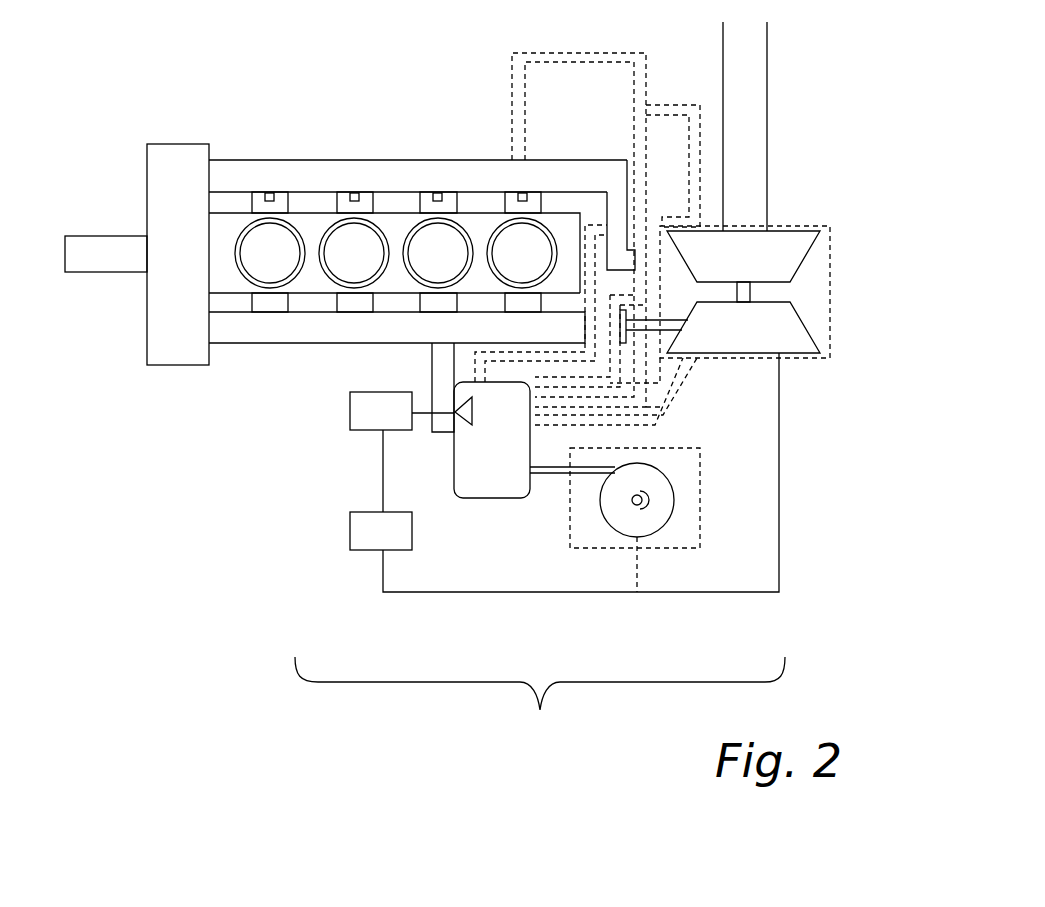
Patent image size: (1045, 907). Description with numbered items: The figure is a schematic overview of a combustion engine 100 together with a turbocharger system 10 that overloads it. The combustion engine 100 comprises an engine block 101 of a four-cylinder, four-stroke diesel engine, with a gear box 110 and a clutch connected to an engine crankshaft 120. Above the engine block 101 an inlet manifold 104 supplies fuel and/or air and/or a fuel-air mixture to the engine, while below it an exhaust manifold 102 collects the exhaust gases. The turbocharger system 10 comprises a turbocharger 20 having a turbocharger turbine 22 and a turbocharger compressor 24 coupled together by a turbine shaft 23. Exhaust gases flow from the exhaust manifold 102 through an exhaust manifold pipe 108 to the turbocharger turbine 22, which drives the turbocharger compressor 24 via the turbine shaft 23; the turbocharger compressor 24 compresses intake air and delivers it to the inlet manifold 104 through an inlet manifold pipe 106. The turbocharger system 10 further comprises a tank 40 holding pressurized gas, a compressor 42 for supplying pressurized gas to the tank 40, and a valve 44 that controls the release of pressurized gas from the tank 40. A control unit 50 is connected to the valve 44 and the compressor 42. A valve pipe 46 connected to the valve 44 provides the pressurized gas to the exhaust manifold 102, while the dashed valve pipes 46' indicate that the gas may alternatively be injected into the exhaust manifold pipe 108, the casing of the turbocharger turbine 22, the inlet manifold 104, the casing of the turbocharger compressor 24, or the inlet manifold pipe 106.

The turbocharger system 10 is at (540, 701).
The turbocharger 20 is at (810, 378).
The turbocharger turbine 22 is at (815, 332).
The turbine shaft 23 is at (752, 290).
The turbocharger compressor 24 is at (808, 253).
The tank 40 is at (512, 469).
The compressor 42 is at (673, 503).
The valve 44 is at (466, 410).
The valve pipe 46 is at (401, 387).
The dashed valve pipes 46' is at (634, 307).
The control unit 50 is at (412, 530).
The combustion engine 100 is at (264, 99).
The engine block 101 is at (304, 225).
The exhaust manifold 102 is at (418, 339).
The inlet manifold 104 is at (418, 189).
The inlet manifold pipe 106 is at (627, 217).
The exhaust manifold pipe 108 is at (652, 332).
The gear box 110 is at (165, 143).
The engine crankshaft 120 is at (92, 275).